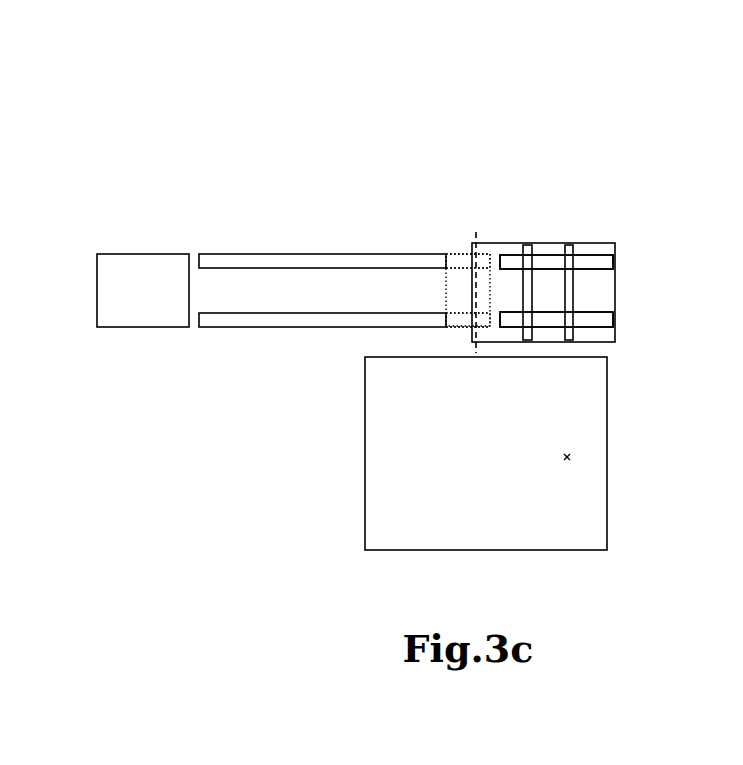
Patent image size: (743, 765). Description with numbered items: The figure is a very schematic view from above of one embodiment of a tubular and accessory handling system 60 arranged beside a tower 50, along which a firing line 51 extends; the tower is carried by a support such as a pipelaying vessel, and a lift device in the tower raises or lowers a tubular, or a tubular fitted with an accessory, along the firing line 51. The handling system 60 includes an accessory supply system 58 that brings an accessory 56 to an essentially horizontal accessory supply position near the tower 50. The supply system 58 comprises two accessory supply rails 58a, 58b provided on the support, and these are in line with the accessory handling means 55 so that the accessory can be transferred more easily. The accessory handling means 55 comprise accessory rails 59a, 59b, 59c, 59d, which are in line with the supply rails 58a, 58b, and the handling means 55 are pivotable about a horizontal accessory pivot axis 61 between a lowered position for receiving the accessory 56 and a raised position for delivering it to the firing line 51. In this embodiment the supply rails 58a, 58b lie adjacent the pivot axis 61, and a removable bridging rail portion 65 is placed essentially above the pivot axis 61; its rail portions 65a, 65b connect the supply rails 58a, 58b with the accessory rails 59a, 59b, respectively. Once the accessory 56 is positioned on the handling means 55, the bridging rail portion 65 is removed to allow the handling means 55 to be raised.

The tower 50 is at (525, 453).
The firing line 51 is at (560, 456).
The accessory handling means 55 is at (552, 222).
The accessory 56 is at (143, 290).
The accessory supply system 58 is at (405, 304).
The accessory supply rail 58a is at (213, 260).
The accessory supply rail 58b is at (287, 350).
The accessory rail 59a is at (543, 267).
The accessory rail 59b is at (590, 318).
The accessory rail 59c is at (520, 240).
The accessory rail 59d is at (573, 242).
The tubular and accessory handling system 60 is at (378, 163).
The horizontal accessory pivot axis 61 is at (474, 230).
The bridging rail portion 65 is at (438, 284).
The rail portion 65a is at (462, 262).
The rail portion 65b is at (461, 320).